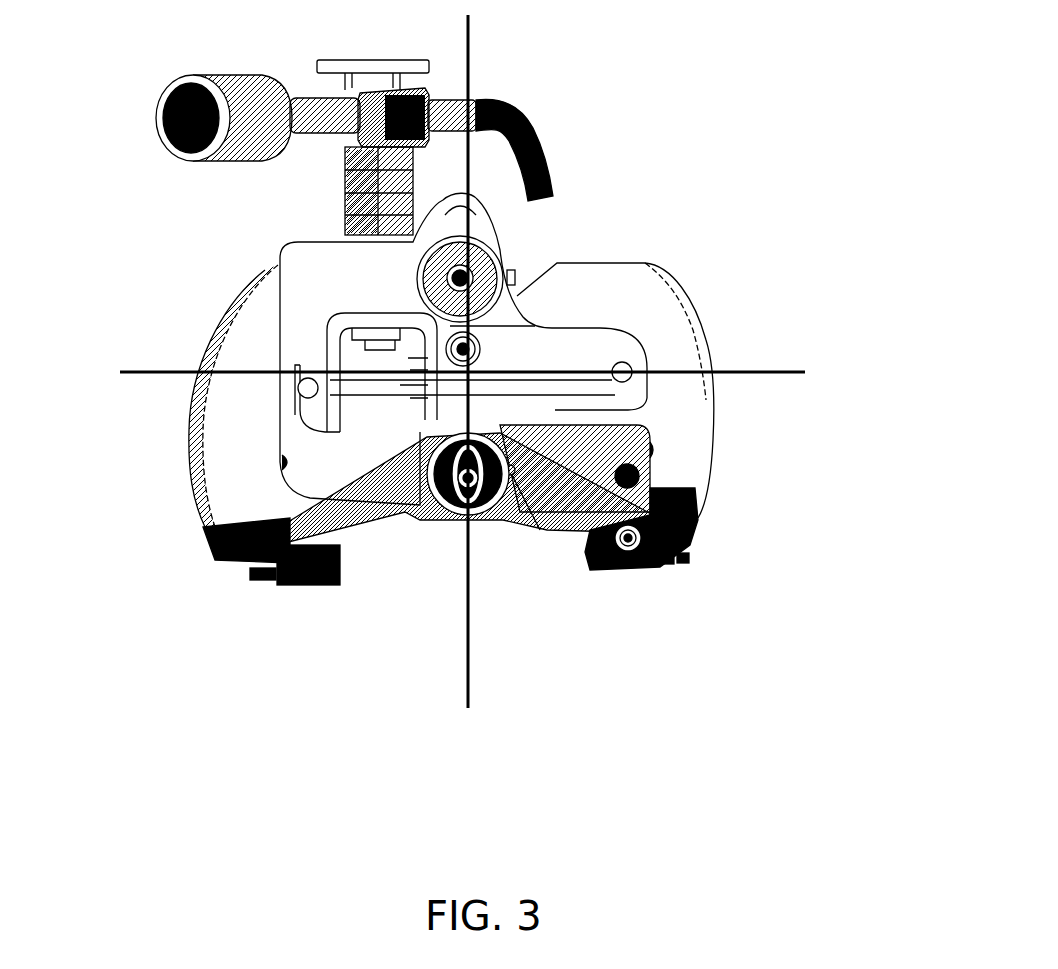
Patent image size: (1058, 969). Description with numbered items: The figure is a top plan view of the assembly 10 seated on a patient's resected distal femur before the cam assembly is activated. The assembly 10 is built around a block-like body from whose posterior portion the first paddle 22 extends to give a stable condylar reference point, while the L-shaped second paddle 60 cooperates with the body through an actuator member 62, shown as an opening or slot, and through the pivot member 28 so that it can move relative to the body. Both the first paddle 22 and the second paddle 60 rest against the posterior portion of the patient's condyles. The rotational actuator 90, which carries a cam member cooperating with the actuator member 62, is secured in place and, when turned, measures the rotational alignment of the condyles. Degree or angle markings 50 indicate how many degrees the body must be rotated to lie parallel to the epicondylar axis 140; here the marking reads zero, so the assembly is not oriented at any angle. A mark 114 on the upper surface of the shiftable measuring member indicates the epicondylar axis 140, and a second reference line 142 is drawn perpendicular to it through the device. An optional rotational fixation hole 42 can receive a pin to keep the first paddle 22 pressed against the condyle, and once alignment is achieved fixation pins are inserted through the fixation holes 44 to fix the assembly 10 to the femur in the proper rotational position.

The assembly 10 is at (250, 256).
The first paddle 22 is at (675, 563).
The pivot member 28 is at (645, 568).
The rotational fixation hole 42 is at (675, 507).
The fixation holes 44 is at (286, 462).
The degree or angle markings 50 is at (543, 530).
The second paddle 60 is at (300, 588).
The actuator member 62 is at (640, 476).
The rotational actuator 90 is at (460, 515).
The mark 114 is at (548, 378).
The epicondylar axis 140 is at (803, 360).
The vertical axis 142 is at (541, 360).